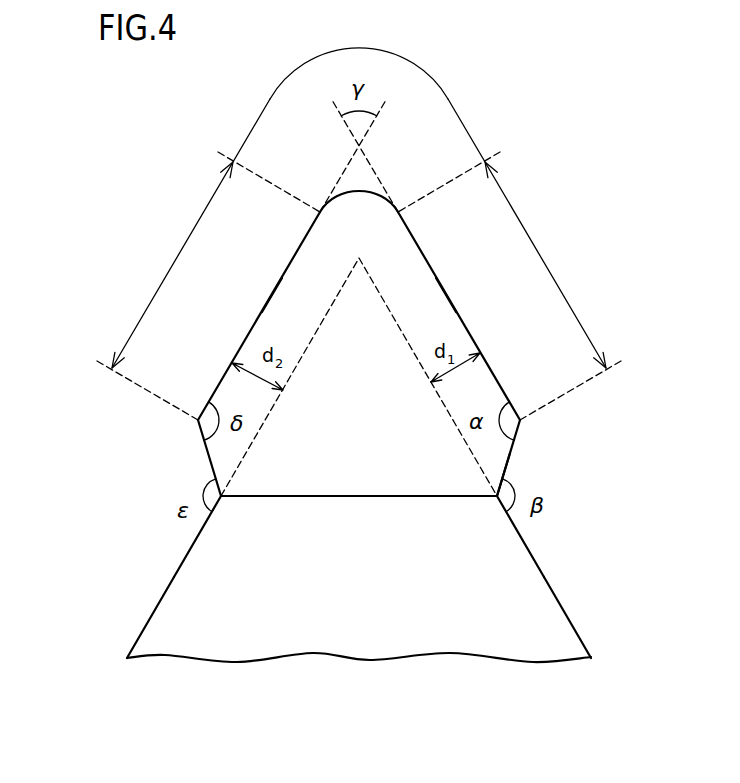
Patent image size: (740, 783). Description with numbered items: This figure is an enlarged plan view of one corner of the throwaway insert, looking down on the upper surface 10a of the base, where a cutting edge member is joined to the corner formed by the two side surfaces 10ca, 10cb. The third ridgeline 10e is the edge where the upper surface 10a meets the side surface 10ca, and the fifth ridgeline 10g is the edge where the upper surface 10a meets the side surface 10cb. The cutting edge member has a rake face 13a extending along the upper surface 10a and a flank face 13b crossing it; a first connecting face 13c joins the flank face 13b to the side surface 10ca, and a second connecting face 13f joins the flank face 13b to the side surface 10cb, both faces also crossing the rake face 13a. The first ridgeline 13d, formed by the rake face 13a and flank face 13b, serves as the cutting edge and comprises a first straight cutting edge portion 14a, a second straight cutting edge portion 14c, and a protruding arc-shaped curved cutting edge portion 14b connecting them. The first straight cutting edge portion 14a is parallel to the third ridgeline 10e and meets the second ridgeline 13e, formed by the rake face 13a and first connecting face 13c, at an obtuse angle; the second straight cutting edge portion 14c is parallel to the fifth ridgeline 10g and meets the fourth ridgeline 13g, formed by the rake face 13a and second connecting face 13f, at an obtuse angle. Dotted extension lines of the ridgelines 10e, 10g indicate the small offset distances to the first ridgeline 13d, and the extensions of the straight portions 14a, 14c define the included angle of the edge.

The curved cutting edge portion 14b is at (359, 59).
The second straight cutting edge portion 14c is at (208, 259).
The first straight cutting edge portion 14a is at (509, 259).
The rake face 13a is at (358, 233).
The flank face 13b is at (294, 257).
The first ridgeline 13d is at (272, 292).
The second connecting face 13f is at (210, 463).
The fourth ridgeline 13g is at (219, 486).
The first connecting face 13c is at (511, 448).
The second ridgeline 13e is at (505, 465).
The fifth ridgeline 10g is at (168, 594).
The side surface 10cb is at (146, 628).
The third ridgeline 10e is at (554, 593).
The side surface 10ca is at (570, 620).
The upper surface 10a is at (355, 635).